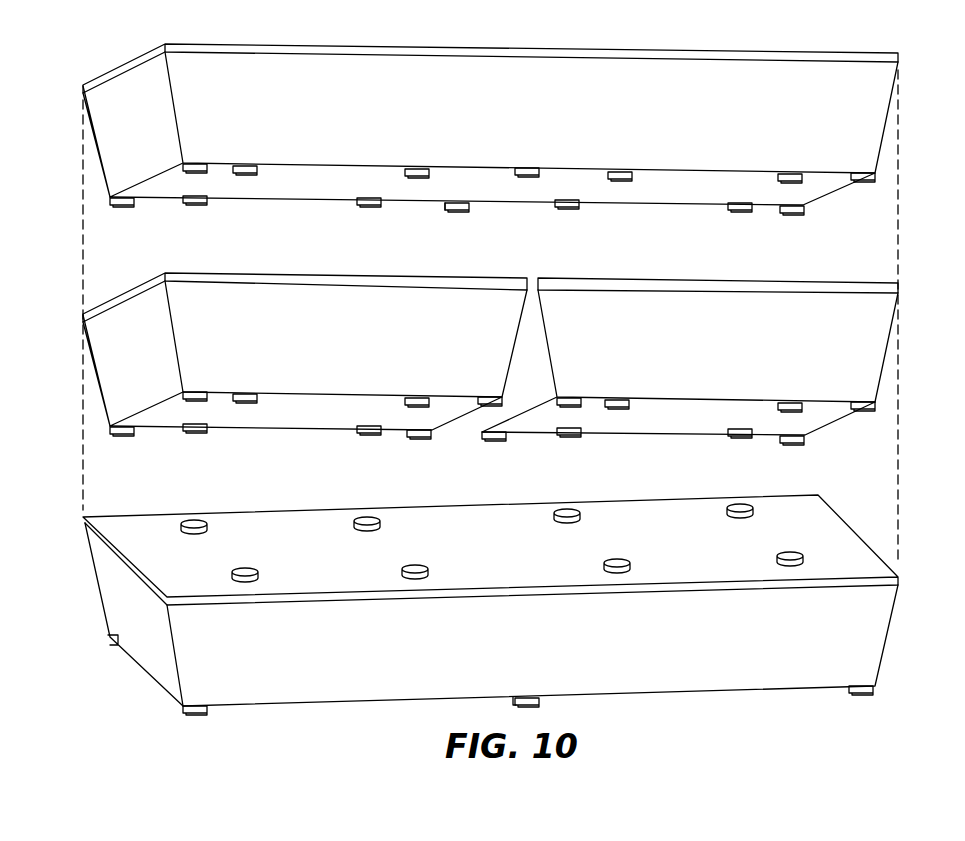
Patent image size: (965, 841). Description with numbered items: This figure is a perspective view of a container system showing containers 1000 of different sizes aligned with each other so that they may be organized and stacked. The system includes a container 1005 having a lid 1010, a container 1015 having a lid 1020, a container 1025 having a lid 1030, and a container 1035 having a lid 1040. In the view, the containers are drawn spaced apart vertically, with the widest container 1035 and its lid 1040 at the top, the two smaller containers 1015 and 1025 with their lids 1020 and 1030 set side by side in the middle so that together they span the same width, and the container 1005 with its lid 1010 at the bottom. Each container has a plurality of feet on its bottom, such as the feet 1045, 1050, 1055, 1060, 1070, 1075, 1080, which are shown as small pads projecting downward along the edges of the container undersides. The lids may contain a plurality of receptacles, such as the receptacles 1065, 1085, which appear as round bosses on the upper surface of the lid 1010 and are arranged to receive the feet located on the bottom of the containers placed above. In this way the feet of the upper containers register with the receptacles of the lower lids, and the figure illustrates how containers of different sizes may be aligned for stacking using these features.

The containers 1000 is at (61, 54).
The container 1005 is at (97, 585).
The lid 1010 is at (468, 603).
The container 1015 is at (98, 385).
The lid 1020 is at (274, 357).
The container 1025 is at (885, 362).
The lid 1030 is at (717, 363).
The container 1035 is at (98, 160).
The lid 1040 is at (464, 134).
The foot 1045 is at (182, 705).
The foot 1050 is at (120, 436).
The foot 1055 is at (788, 444).
The foot 1060 is at (455, 212).
The receptacle 1065 is at (380, 524).
The foot 1070 is at (365, 434).
The foot 1075 is at (570, 436).
The foot 1080 is at (617, 182).
The receptacle 1085 is at (617, 558).